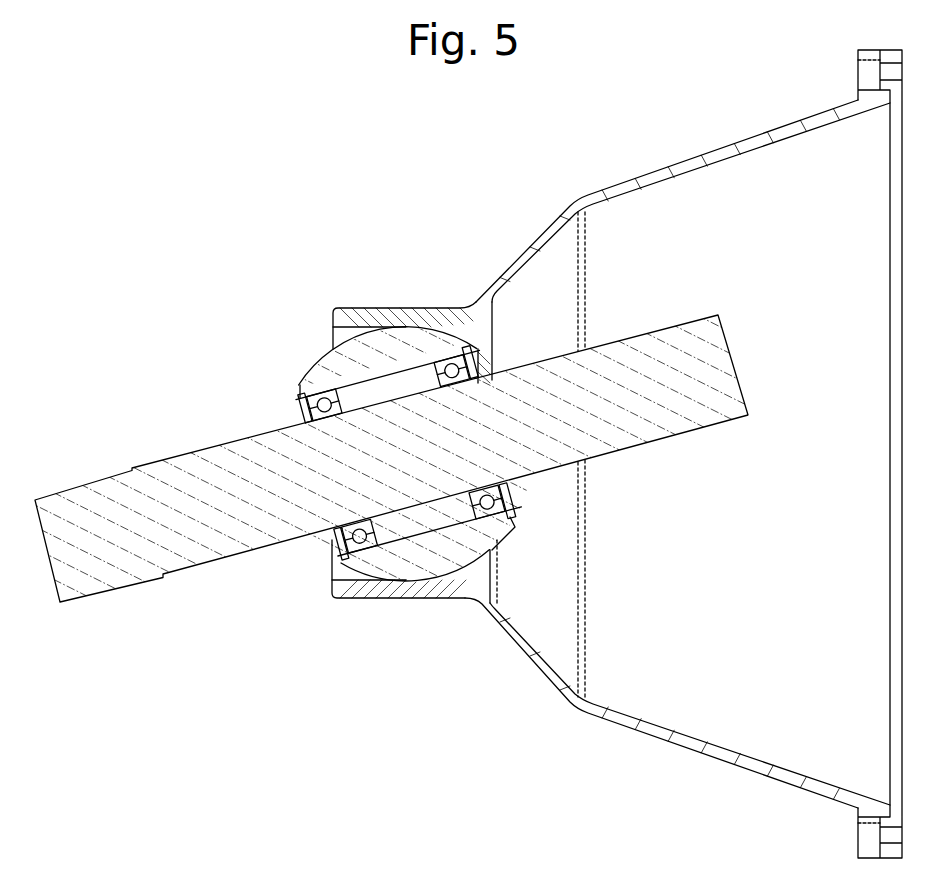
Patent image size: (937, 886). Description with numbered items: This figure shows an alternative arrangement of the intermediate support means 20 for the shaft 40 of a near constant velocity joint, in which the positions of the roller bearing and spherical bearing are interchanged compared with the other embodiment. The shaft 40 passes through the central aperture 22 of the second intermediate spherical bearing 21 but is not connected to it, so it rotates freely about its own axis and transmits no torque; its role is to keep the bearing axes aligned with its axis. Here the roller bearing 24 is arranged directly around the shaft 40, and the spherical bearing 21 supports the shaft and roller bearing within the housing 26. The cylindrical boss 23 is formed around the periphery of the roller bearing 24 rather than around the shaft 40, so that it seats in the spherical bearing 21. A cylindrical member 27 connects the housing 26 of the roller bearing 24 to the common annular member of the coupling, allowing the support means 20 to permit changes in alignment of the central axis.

The second intermediate support means 20 is at (400, 443).
The second intermediate spherical bearing 21 is at (372, 583).
The central aperture 22 is at (432, 500).
The cylindrical boss 23 is at (397, 352).
The roller bearing 24 is at (318, 400).
The housing 26 is at (447, 322).
The cylindrical member 27 is at (677, 168).
The shaft 40 is at (208, 488).